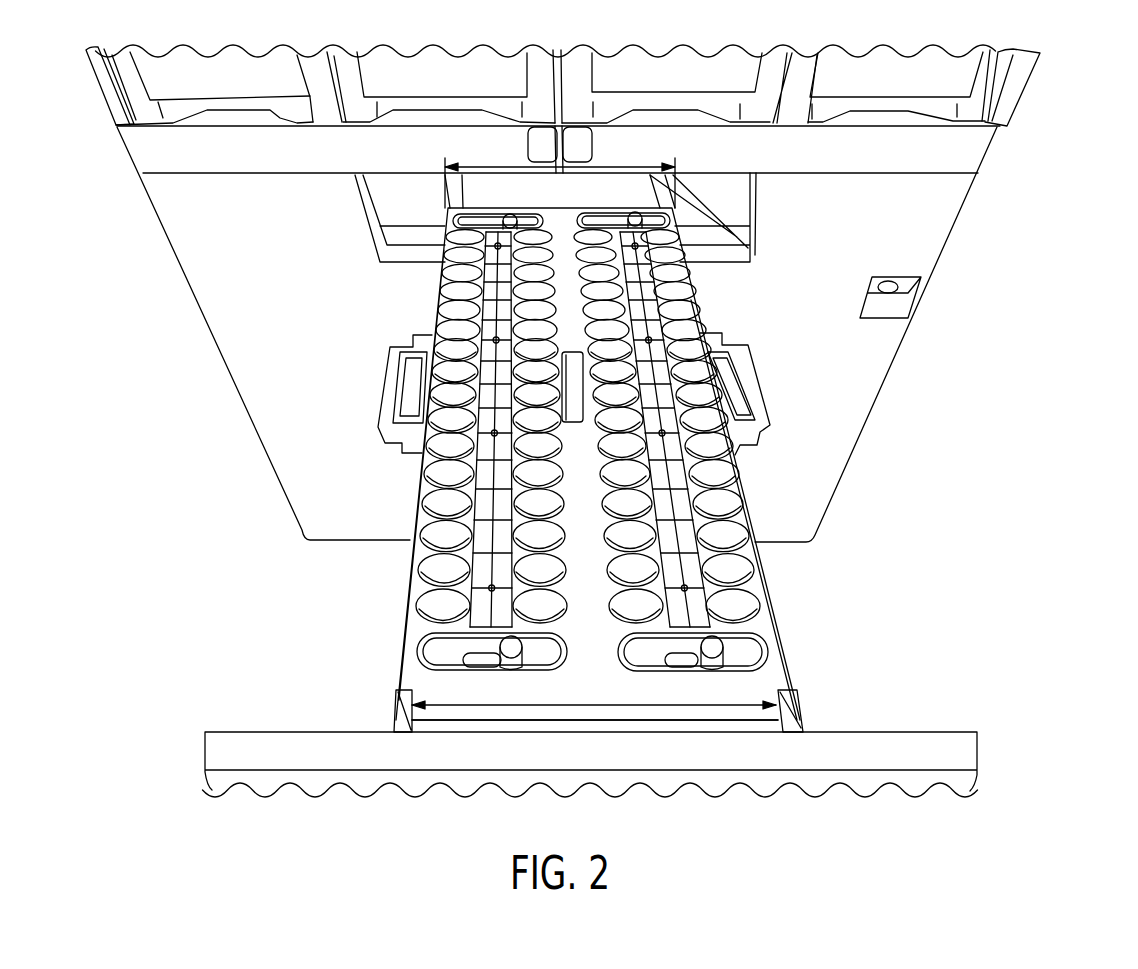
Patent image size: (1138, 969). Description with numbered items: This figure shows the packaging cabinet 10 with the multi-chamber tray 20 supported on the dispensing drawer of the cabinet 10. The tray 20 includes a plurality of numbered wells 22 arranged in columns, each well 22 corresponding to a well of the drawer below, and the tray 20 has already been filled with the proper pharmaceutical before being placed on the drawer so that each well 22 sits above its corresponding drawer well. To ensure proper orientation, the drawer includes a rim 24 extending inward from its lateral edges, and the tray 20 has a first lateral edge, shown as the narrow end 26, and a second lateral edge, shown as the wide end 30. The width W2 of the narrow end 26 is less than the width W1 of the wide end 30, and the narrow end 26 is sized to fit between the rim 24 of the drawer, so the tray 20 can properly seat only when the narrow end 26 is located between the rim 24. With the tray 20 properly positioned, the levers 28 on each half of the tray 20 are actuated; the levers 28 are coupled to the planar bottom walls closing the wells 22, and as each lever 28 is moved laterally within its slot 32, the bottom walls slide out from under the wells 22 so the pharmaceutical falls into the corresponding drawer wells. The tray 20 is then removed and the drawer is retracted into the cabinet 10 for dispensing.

The cabinet 10 is at (1078, 60).
The tray 20 is at (596, 484).
The wells 22 is at (523, 400).
The rim 24 is at (403, 727).
The narrow end 26 is at (592, 680).
The levers 28 is at (722, 662).
The wide end 30 is at (563, 230).
The slot 32 is at (677, 676).
The width of wide end W1 is at (608, 166).
The width of narrow end W2 is at (497, 705).